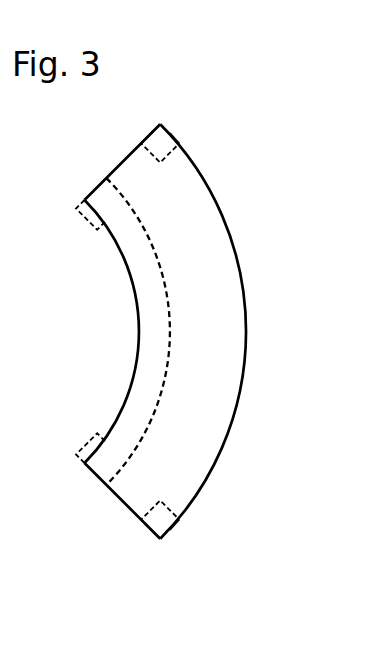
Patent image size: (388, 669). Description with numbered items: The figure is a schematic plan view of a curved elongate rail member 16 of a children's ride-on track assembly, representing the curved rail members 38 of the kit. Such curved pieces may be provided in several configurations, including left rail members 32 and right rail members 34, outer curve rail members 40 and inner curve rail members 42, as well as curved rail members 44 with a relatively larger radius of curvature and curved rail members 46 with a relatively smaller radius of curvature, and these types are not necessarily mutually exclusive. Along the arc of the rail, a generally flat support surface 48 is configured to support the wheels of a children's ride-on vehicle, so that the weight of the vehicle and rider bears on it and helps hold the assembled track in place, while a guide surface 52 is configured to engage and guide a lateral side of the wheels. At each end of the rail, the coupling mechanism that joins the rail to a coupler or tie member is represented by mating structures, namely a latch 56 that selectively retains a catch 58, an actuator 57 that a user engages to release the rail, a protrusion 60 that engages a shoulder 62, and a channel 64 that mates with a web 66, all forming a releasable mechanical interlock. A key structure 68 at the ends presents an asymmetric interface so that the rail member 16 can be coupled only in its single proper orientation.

The elongate rail member 16 is at (315, 76).
The curved rail member 38 is at (311, 109).
The left rail member 32 is at (318, 136).
The right rail member 34 is at (318, 167).
The outer curve rail member 40 is at (318, 198).
The inner curve rail member 42 is at (318, 229).
The curved rail member with relatively larger radius of curvature 44 is at (318, 261).
The curved rail member with relatively smaller radius of curvature 46 is at (318, 292).
The support surface 48 is at (155, 271).
The guide surface 52 is at (172, 344).
The latch 56 is at (173, 121).
The actuator 57 is at (181, 122).
The catch 58 is at (186, 121).
The protrusion 60 is at (189, 126).
The shoulder 62 is at (192, 131).
The channel 64 is at (190, 136).
The web 66 is at (192, 147).
The key structure 68 is at (142, 131).